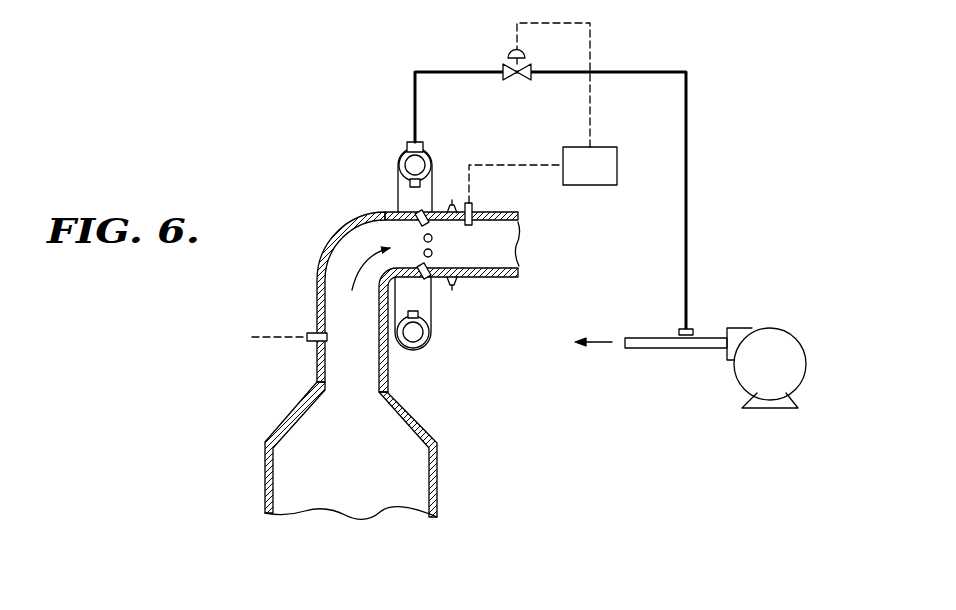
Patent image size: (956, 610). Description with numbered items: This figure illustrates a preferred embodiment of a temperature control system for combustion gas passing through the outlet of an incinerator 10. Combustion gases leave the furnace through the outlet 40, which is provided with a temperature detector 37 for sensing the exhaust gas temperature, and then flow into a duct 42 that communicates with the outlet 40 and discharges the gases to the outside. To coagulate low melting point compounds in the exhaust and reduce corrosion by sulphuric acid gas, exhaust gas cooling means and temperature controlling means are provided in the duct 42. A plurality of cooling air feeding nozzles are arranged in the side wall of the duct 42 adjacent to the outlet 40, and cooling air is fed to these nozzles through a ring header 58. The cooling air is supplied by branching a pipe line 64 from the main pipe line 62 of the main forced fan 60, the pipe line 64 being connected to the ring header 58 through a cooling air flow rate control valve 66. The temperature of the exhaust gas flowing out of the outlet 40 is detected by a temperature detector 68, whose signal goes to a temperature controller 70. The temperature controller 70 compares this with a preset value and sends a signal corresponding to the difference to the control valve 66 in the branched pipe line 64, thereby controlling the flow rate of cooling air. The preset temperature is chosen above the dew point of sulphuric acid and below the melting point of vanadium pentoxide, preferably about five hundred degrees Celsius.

The duct 10 is at (437, 480).
The temperature detector 37 is at (312, 333).
The outlet 40 is at (360, 373).
The duct 42 is at (440, 282).
The ring header 58 is at (405, 152).
The main forced fan 60 is at (790, 333).
The main pipe line 62 is at (648, 348).
The pipe line 64 is at (686, 158).
The cooling air flow rate control valve 66 is at (512, 52).
The temperature detector 68 is at (475, 207).
The temperature controller 70 is at (605, 185).